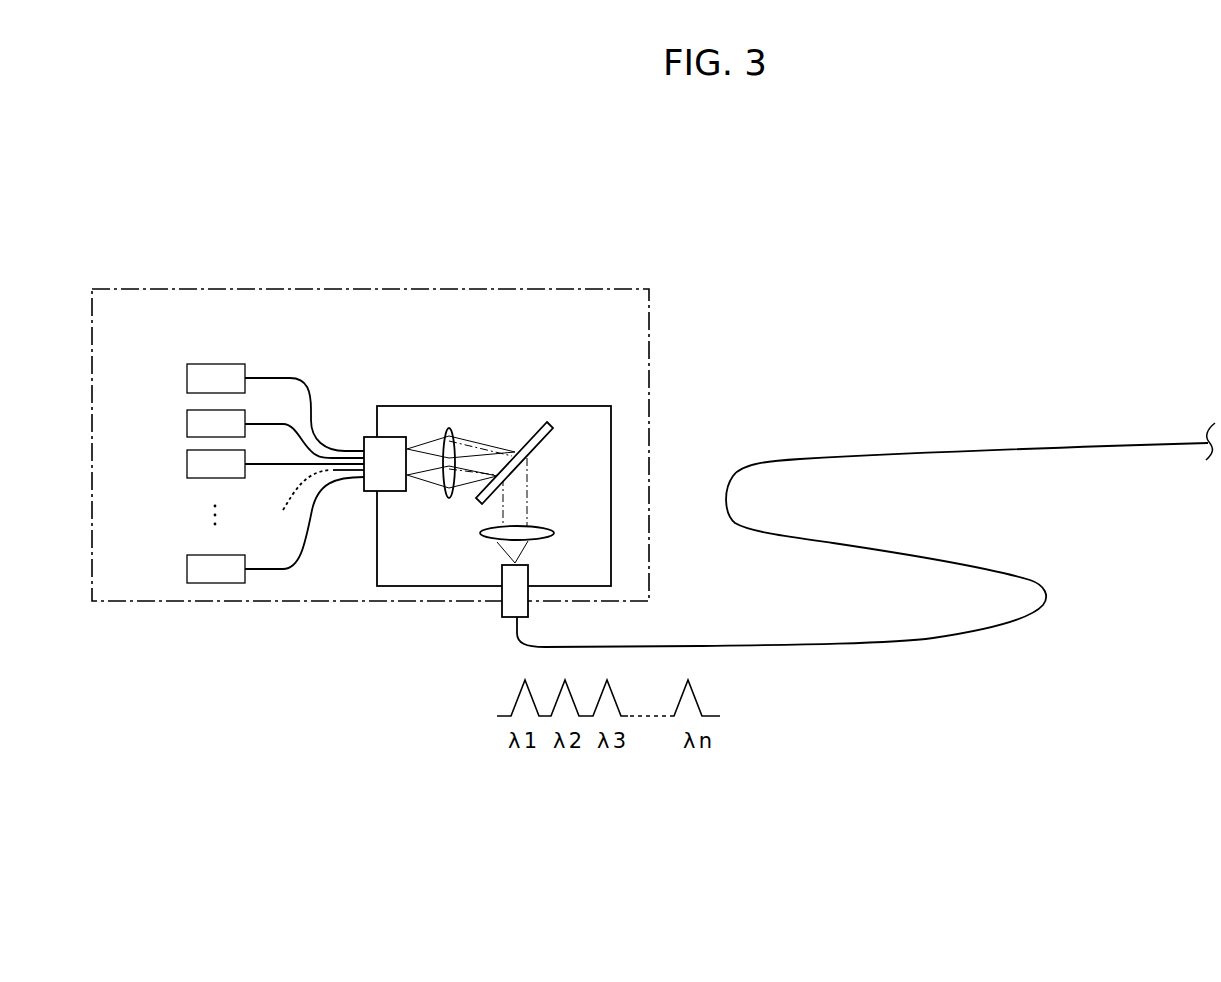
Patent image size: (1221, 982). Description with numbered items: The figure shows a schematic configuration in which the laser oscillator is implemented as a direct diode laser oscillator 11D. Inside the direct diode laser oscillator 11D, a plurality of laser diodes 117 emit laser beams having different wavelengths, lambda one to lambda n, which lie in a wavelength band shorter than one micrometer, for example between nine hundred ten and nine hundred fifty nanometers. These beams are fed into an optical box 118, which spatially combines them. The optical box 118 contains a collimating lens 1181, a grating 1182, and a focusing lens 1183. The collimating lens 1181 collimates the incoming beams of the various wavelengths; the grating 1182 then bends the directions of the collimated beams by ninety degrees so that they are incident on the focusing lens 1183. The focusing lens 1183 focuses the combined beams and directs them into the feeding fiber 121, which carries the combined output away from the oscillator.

The direct diode laser oscillator 11D is at (423, 289).
The laser diodes 117 is at (219, 411).
The optical box 118 is at (534, 406).
The collimating lens 1181 is at (449, 428).
The grating 1182 is at (544, 442).
The focusing lens 1183 is at (540, 539).
The feeding fiber 121 is at (976, 451).